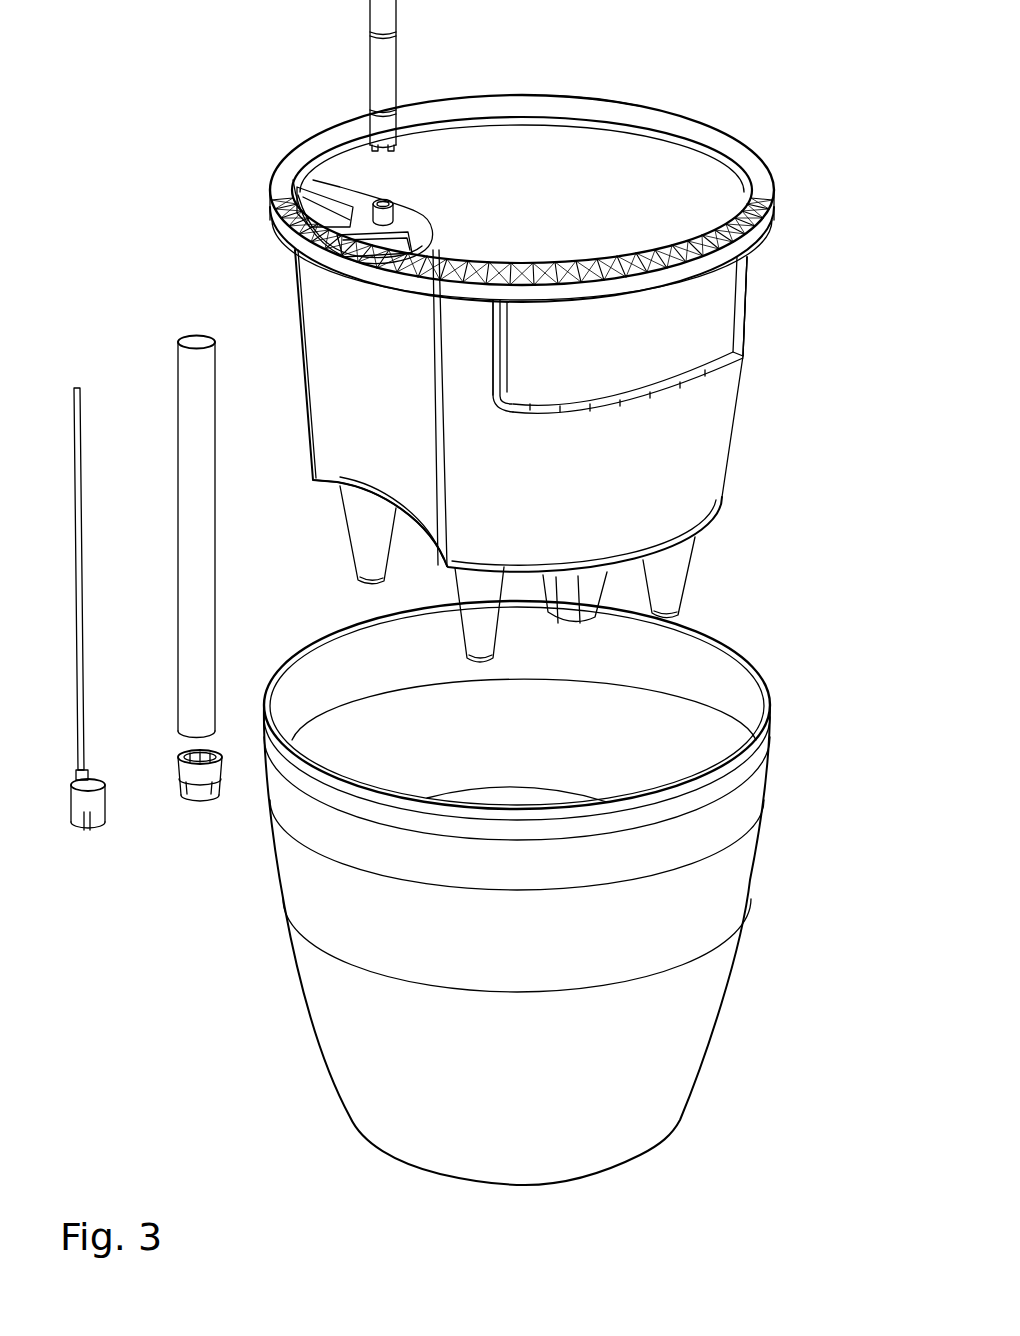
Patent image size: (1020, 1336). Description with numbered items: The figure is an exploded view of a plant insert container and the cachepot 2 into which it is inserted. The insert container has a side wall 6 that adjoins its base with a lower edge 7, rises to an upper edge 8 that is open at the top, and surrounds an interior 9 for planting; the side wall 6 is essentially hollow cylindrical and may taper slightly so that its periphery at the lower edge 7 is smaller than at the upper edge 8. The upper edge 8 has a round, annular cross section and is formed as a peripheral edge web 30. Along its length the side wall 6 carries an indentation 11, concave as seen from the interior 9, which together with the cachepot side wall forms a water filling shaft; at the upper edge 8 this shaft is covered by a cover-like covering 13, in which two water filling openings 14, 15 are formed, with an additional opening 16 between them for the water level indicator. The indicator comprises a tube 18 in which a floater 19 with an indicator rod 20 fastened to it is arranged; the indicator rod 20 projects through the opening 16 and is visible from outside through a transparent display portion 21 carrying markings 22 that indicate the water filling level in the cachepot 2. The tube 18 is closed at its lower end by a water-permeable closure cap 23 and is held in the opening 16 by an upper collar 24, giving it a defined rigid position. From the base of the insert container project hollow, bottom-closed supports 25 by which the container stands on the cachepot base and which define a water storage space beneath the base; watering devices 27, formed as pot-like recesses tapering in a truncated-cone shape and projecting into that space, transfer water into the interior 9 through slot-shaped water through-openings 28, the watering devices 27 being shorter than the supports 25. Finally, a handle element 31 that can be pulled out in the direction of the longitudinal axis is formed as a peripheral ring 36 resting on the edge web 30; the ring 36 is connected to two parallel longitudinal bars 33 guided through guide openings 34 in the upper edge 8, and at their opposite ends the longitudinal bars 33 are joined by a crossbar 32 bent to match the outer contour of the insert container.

The cachepot 2 is at (737, 897).
The side wall 6 is at (627, 491).
The lower edge 7 is at (333, 487).
The upper edge 8 is at (770, 232).
The interior 9 is at (530, 163).
The indentation 11 is at (330, 407).
The covering 13 is at (280, 210).
The water filling opening 14 is at (370, 243).
The water filling opening 15 is at (353, 218).
The opening 16 is at (383, 203).
The tube 18 is at (193, 340).
The floater 19 is at (90, 827).
The indicator rod 20 is at (77, 400).
The display portion 21 is at (388, 58).
The markings 22 is at (372, 110).
The closure cap 23 is at (203, 800).
The upper collar 24 is at (320, 202).
The supports 25 is at (680, 560).
The watering devices 27 is at (590, 598).
The water through-openings 28 is at (570, 607).
The edge web 30 is at (738, 258).
The handle element 31 is at (600, 97).
The crossbar 32 is at (643, 403).
The longitudinal bars 33 is at (737, 297).
The guide openings 34 is at (518, 308).
The ring 36 is at (653, 120).